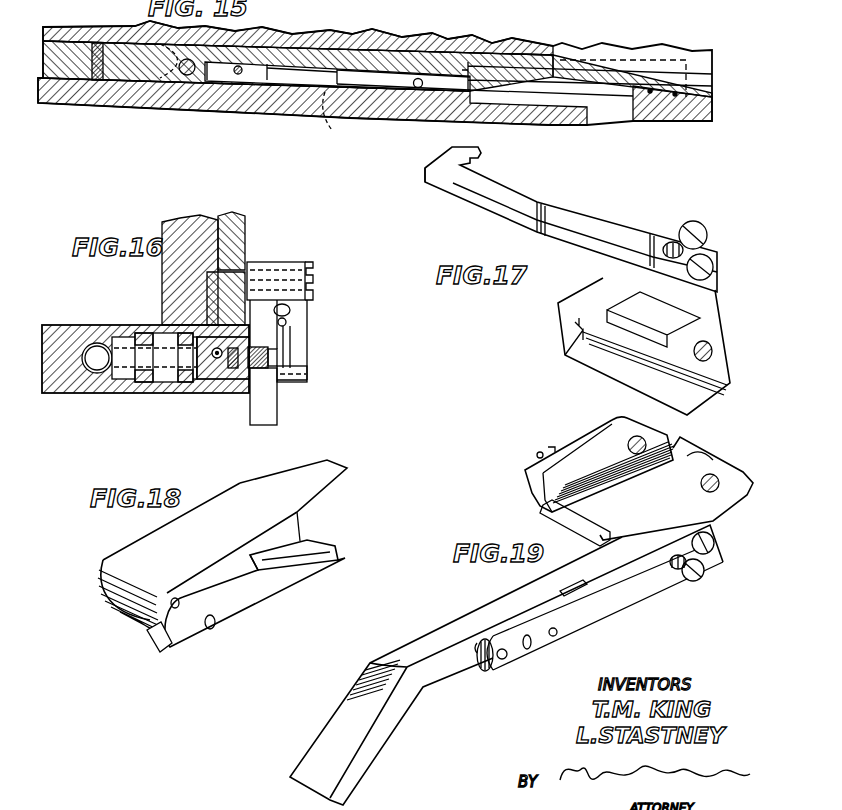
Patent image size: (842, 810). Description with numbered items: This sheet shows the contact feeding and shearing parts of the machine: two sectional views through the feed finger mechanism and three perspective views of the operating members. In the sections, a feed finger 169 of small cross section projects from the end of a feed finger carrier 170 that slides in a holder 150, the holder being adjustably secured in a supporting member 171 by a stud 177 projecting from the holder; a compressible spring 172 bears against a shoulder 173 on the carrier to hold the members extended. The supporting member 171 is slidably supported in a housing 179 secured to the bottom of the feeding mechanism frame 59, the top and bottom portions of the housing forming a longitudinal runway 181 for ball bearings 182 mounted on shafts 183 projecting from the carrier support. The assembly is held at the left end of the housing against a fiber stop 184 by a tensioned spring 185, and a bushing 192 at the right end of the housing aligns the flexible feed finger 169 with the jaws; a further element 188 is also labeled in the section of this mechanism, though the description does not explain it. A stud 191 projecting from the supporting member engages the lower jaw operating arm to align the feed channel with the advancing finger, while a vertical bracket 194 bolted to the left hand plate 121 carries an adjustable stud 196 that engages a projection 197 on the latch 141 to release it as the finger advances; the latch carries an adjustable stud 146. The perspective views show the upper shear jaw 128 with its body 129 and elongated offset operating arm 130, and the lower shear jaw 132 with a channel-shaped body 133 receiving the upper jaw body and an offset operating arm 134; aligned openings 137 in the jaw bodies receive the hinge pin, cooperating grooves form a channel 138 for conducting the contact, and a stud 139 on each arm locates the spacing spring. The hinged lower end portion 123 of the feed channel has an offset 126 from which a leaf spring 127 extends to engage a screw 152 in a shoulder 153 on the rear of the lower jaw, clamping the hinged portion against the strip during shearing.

In FIG. 16, the feeding mechanism frame 59 is at (203, 222).
In FIG. 16, the left hand plate 121 is at (222, 248).
In FIG. 18, the lower end portion of the feed channel 123 is at (262, 606).
In FIG. 18, the offset 126 is at (147, 551).
In FIG. 18, the leaf spring 127 is at (320, 468).
In FIG. 17, the upper shear jaw 128 is at (722, 281).
In FIG. 17, the body 129 is at (700, 347).
In FIG. 17, the operating arm 130 is at (590, 228).
In FIG. 19, the lower shear jaw 132 is at (737, 466).
In FIG. 19, the channel-shaped body 133 is at (535, 492).
In FIG. 16, the operating arm 134 is at (275, 414).
In FIG. 19, the operating arm 134 is at (437, 647).
In FIG. 17, the openings 137 is at (712, 360).
In FIG. 19, the openings 137 is at (672, 450).
In FIG. 17, the channel 138 is at (615, 356).
In FIG. 19, the channel 138 is at (577, 510).
In FIG. 17, the stud 139 is at (693, 223).
In FIG. 19, the stud 139 is at (706, 572).
In FIG. 16, the latch 141 is at (302, 340).
In FIG. 16, the adjustable stud 146 is at (292, 316).
In FIG. 15, the holder 150 is at (247, 66).
In FIG. 16, the holder 150 is at (250, 375).
In FIG. 19, the screw 152 is at (537, 458).
In FIG. 19, the shoulder 153 is at (551, 447).
In FIG. 15, the feed finger 169 is at (600, 96).
In FIG. 15, the feed finger carrier 170 is at (462, 72).
In FIG. 16, the feed finger carrier 170 is at (264, 378).
In FIG. 15, the supporting member 171 is at (392, 92).
In FIG. 16, the supporting member 171 is at (216, 372).
In FIG. 16, the compressible spring 172 is at (232, 375).
In FIG. 15, the shoulder 173 is at (418, 90).
In FIG. 15, the stud 177 is at (240, 75).
In FIG. 15, the housing 179 is at (55, 68).
In FIG. 16, the housing 179 is at (48, 360).
In FIG. 15, the longitudinal runway 181 is at (232, 95).
In FIG. 16, the longitudinal runway 181 is at (166, 375).
In FIG. 15, the ball bearings 182 is at (158, 72).
In FIG. 16, the ball bearings 182 is at (150, 335).
In FIG. 15, the shafts 183 is at (125, 88).
In FIG. 16, the shafts 183 is at (212, 362).
In FIG. 15, the fiber stop 184 is at (96, 54).
In FIG. 16, the tensioned spring 185 is at (103, 332).
In FIG. 15, the spring 188 is at (192, 76).
In FIG. 16, the stud 191 is at (261, 345).
In FIG. 15, the bushing 192 is at (690, 120).
In FIG. 16, the vertical bracket 194 is at (306, 331).
In FIG. 16, the adjustable stud 196 is at (296, 374).
In FIG. 16, the projection 197 is at (292, 368).